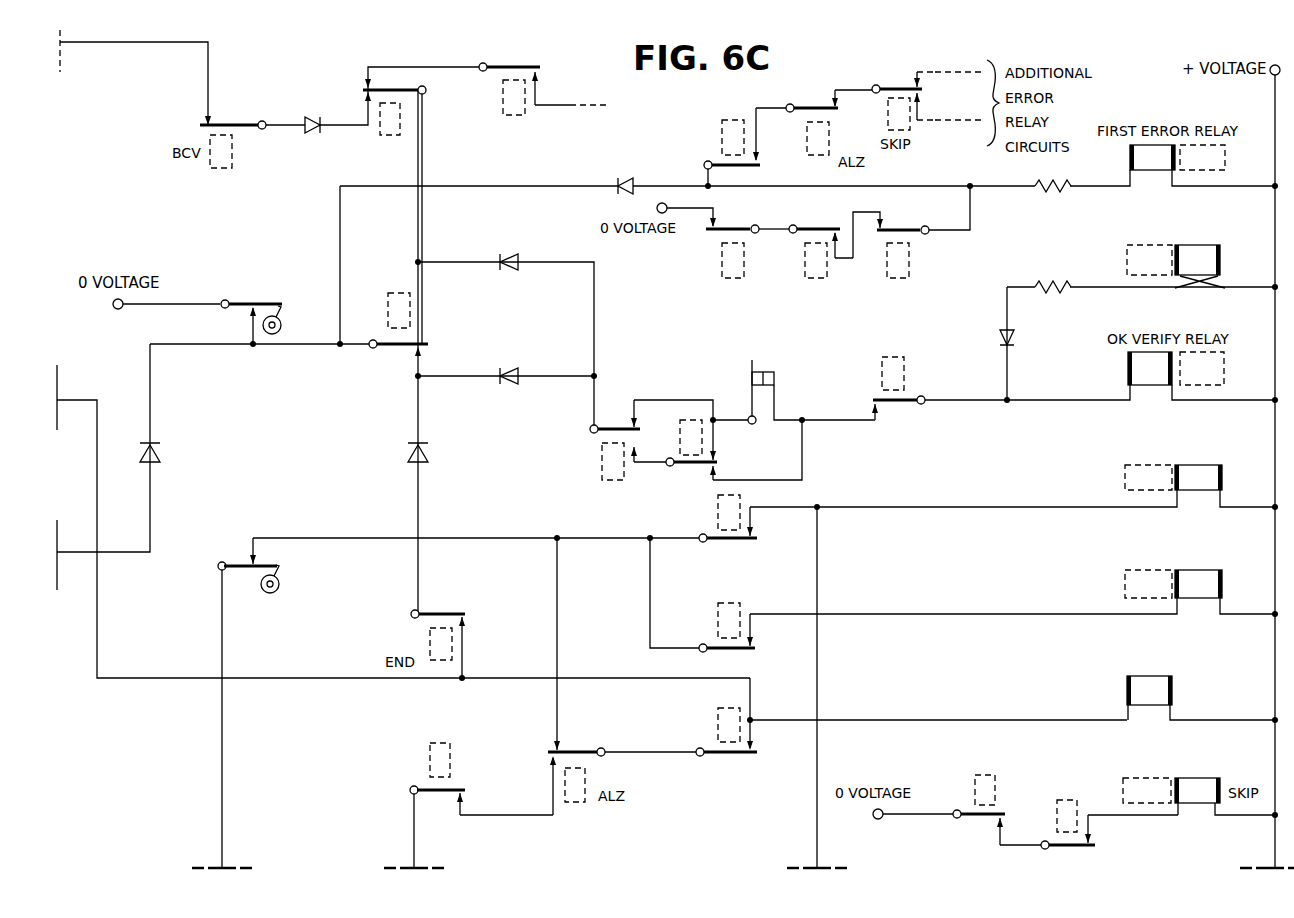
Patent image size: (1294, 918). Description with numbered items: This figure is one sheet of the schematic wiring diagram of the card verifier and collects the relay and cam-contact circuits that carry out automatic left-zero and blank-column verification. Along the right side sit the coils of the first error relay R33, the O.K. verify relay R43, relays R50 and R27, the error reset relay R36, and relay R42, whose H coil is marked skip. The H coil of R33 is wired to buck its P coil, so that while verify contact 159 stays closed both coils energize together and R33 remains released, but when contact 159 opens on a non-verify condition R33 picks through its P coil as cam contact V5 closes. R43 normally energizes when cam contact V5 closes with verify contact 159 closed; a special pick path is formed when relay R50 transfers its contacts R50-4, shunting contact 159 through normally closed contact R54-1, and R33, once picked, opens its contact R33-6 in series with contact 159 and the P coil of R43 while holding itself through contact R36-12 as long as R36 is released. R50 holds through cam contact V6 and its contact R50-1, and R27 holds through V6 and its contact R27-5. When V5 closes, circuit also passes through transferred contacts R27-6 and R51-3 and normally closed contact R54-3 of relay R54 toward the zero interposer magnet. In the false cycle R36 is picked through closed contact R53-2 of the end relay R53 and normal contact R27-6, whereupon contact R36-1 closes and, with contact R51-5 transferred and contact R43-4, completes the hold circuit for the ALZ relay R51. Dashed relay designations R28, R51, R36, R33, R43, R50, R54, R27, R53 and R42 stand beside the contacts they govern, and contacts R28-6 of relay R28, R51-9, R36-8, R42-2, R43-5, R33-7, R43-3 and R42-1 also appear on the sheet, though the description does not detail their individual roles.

The normally closed relay contact R54-3 is at (213, 124).
The relay R54 is at (232, 151).
The transferred relay contact R51-3 is at (363, 90).
The ALZ relay R51 is at (397, 135).
The relay R28 contact 6 R28-6 is at (543, 70).
The relay R28 is at (491, 97).
The relay R51 contact 9 R51-9 is at (826, 106).
The error reset relay R36 is at (1190, 690).
The relay R36 contact 8 R36-8 is at (760, 165).
The relay R42 contact 2 R42-2 is at (912, 86).
The skip relay R42 coil R42 is at (1188, 778).
The first error relay R33 is at (1158, 170).
The relay R43 contact 5 R43-5 is at (888, 230).
The O.K. verify relay R43 is at (448, 743).
The relay contact R36-12 is at (706, 235).
The relay R33 contact 7 R33-7 is at (838, 228).
The relay R27 is at (405, 286).
The relay contact R27-6 is at (430, 340).
The relay contact R50-4 is at (628, 431).
The relay R50 is at (1213, 450).
The normally closed relay contact R54-1 is at (720, 466).
The verify contact 159 is at (772, 372).
The relay contact R33-6 is at (890, 404).
The relay contact R50-1 is at (757, 545).
The cam contact V5 is at (268, 300).
The cam contact V6 is at (246, 558).
The relay contact R53-2 is at (470, 614).
The end relay R53 is at (430, 642).
The relay contact R27-5 is at (757, 640).
The relay contact R36-1 is at (785, 765).
The transferred relay contact R51-5 is at (548, 756).
The relay contact R43-4 is at (450, 795).
The relay R43 contact 3 R43-3 is at (985, 818).
The relay R42 contact 1 R42-1 is at (1093, 842).